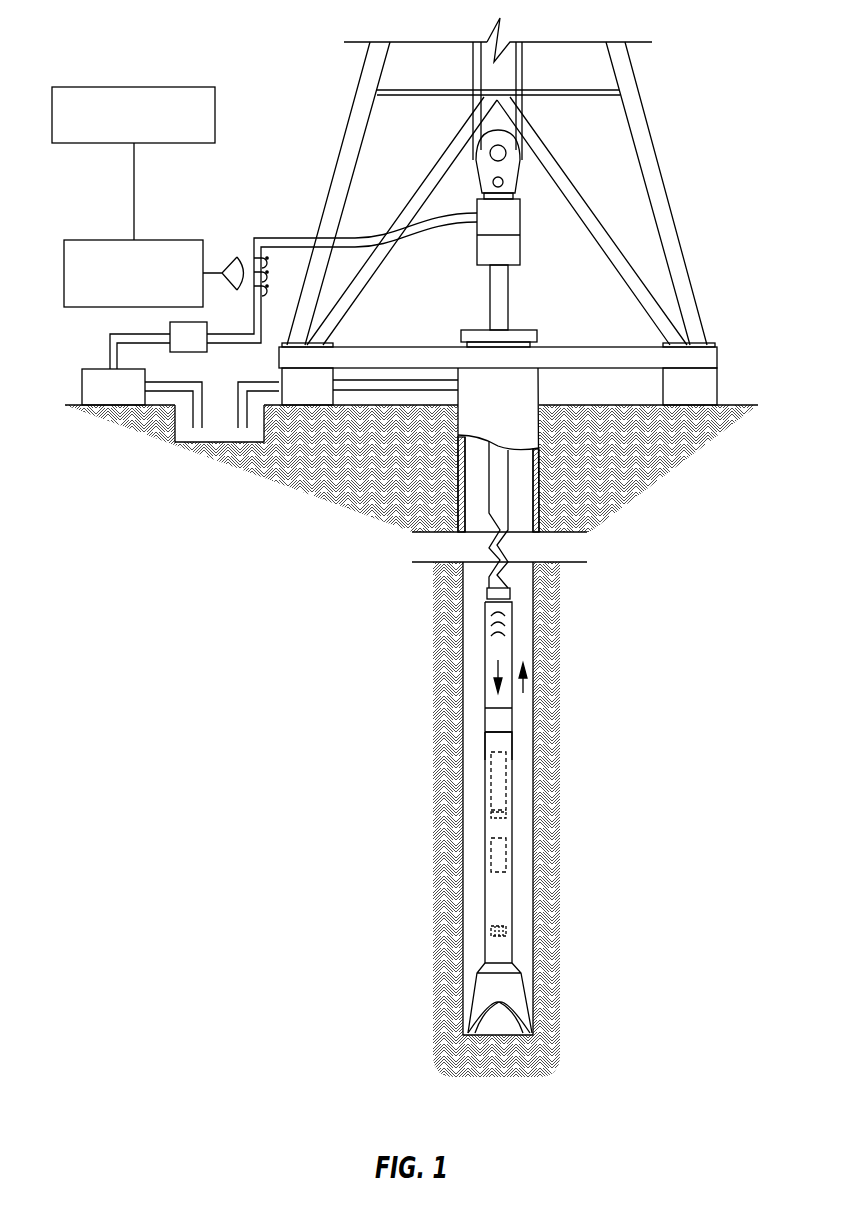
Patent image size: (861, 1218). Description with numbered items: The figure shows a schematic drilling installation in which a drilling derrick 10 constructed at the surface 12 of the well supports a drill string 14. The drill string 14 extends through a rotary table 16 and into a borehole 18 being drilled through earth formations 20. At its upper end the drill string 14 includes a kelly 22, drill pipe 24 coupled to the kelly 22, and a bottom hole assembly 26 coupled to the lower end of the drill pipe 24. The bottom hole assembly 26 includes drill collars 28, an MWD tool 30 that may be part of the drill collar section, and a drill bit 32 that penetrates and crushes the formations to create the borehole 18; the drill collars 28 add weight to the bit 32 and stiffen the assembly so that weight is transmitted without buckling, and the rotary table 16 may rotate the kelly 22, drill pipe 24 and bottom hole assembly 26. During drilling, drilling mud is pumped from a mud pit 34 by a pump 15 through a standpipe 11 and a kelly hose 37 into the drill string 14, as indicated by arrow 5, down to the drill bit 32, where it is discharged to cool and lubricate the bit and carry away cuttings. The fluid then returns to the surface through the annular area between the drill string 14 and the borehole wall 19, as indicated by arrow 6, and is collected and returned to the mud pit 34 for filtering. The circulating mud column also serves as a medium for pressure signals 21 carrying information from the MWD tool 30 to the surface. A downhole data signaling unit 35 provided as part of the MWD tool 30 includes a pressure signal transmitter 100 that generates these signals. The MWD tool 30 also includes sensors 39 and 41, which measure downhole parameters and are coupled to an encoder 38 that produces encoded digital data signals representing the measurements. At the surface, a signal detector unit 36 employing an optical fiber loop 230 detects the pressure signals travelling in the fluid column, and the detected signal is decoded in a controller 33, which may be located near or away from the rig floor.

The drilling derrick 10 is at (352, 108).
The standpipe 11 is at (262, 236).
The surface 12 is at (740, 405).
The drill string 14 is at (497, 485).
The pump 15 is at (93, 369).
The rotary table 16 is at (540, 337).
The borehole 18 is at (517, 518).
The borehole wall 19 is at (467, 443).
The earth formations 20 is at (285, 675).
The pressure signals 21 is at (493, 623).
The kelly 22 is at (508, 298).
The drill pipe 24 is at (488, 583).
The bottom hole assembly 26 is at (518, 783).
The drill collars 28 is at (504, 646).
The MWD tool 30 is at (505, 815).
The drill bit 32 is at (528, 997).
The controller 33 is at (82, 87).
The mud pit 34 is at (220, 442).
The downhole data signaling unit 35 is at (505, 743).
The signal detector unit 36 is at (85, 240).
The kelly hose 37 is at (405, 240).
The encoder 38 is at (505, 862).
The sensor 39 is at (492, 932).
The sensor 41 is at (505, 932).
The pressure signal transmitter 100 is at (492, 772).
The optical fiber loop 230 is at (250, 240).
The arrow 5 is at (492, 668).
The arrow 6 is at (523, 685).